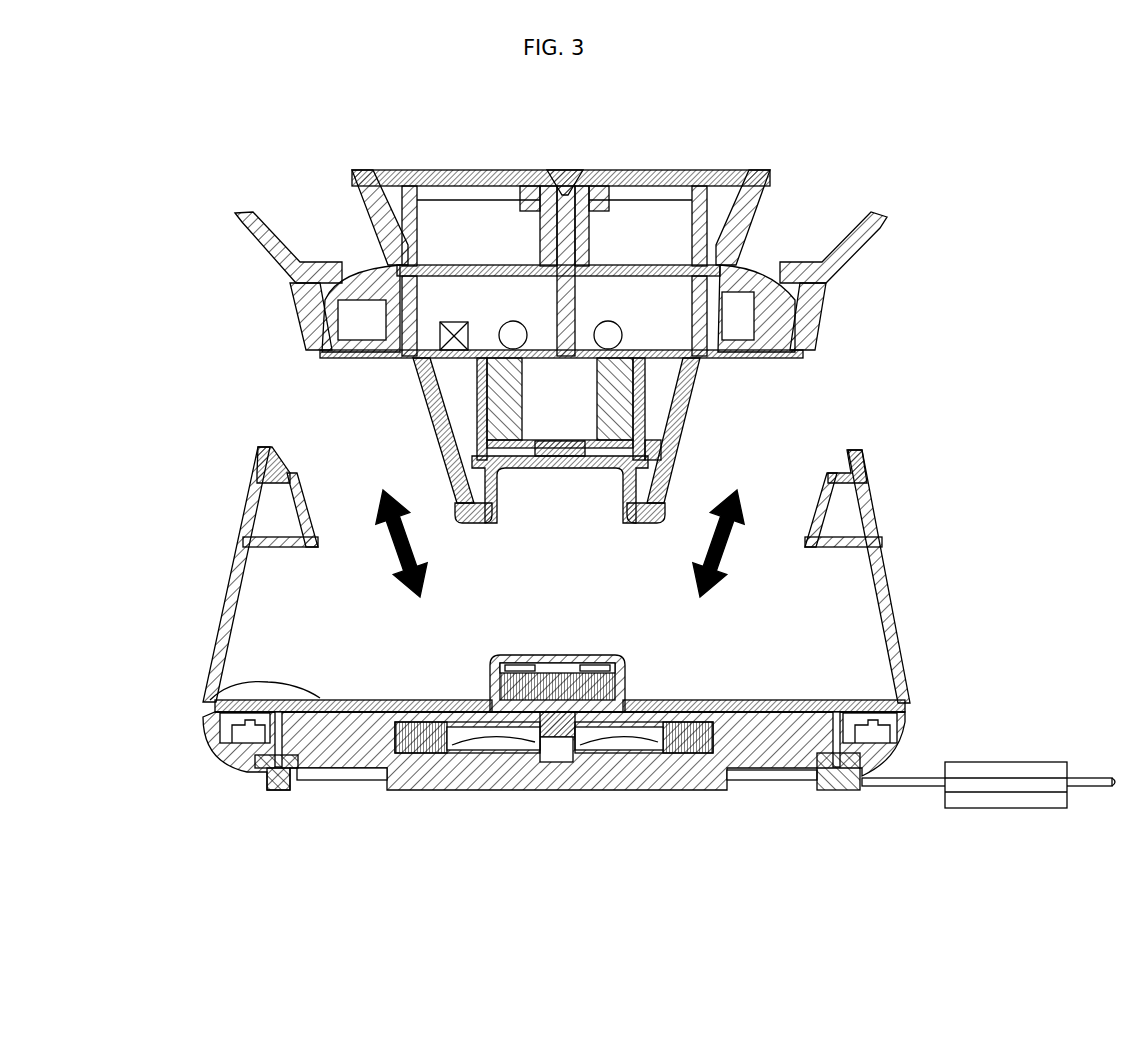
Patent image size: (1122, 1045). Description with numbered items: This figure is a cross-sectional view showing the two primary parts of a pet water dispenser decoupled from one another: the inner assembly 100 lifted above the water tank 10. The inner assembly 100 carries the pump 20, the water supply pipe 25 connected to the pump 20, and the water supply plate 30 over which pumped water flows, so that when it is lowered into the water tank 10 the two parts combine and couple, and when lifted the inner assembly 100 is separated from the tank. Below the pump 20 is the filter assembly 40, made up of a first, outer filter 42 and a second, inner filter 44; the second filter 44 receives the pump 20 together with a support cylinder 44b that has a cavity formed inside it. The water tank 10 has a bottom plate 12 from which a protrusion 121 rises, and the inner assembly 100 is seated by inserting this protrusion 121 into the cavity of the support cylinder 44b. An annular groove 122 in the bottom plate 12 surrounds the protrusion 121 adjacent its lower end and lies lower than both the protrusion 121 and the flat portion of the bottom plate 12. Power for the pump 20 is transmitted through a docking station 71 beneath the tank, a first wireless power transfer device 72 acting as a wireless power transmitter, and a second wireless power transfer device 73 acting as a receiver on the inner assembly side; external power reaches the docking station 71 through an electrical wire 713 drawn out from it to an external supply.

The inner assembly 100 is at (900, 172).
The water tank 10 is at (659, 698).
The bottom plate 12 is at (210, 690).
The pump 20 is at (573, 402).
The water supply pipe 25 is at (567, 170).
The water supply plate 30 is at (640, 170).
The filter assembly 40 is at (1030, 445).
The first filter 42 is at (688, 423).
The second filter 44 is at (648, 428).
The support cylinder 44b is at (650, 457).
The docking station 71 is at (618, 778).
The first wireless power transfer device 72 is at (500, 767).
The second wireless power transfer device 73 is at (575, 468).
The protrusion 121 is at (457, 767).
The groove 122 is at (663, 725).
The electrical wire 713 is at (882, 790).